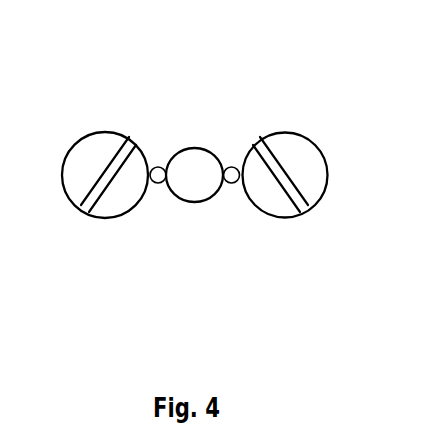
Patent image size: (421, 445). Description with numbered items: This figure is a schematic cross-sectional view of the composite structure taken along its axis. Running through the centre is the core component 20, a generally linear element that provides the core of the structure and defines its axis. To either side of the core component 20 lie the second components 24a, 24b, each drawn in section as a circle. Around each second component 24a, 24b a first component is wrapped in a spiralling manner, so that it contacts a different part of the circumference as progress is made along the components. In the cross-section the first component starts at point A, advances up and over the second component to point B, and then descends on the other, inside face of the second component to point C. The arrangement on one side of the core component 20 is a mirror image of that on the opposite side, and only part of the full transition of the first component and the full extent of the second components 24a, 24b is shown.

The core component 20 is at (195, 170).
The second component 24a is at (127, 198).
The second component 24b is at (258, 198).
The point A is at (83, 210).
The point B is at (134, 129).
The point C is at (157, 165).